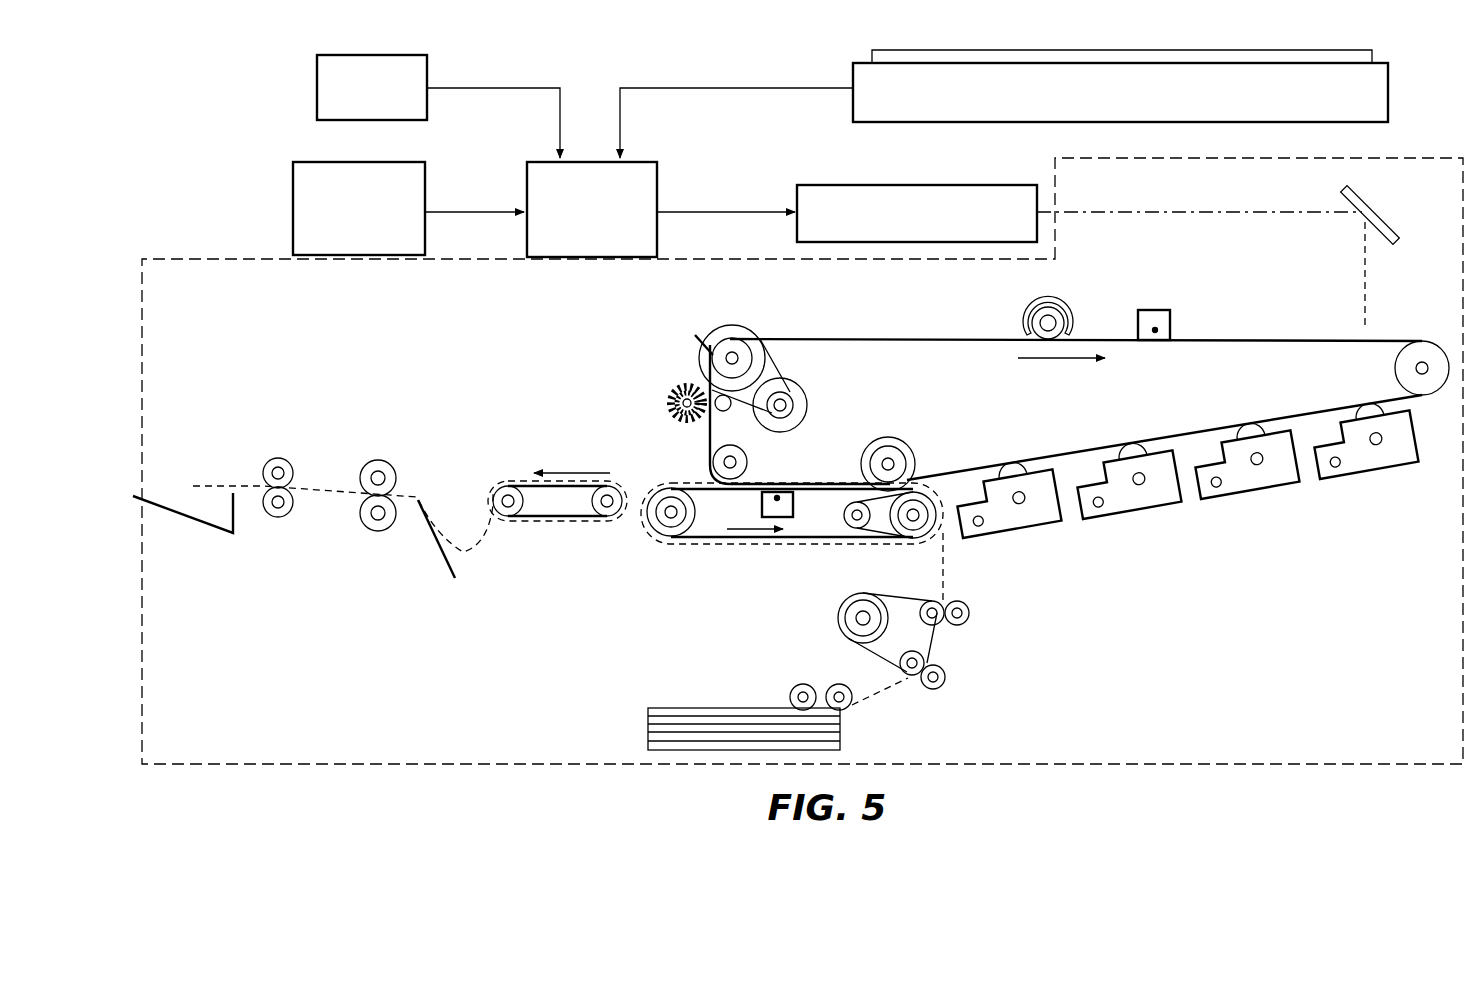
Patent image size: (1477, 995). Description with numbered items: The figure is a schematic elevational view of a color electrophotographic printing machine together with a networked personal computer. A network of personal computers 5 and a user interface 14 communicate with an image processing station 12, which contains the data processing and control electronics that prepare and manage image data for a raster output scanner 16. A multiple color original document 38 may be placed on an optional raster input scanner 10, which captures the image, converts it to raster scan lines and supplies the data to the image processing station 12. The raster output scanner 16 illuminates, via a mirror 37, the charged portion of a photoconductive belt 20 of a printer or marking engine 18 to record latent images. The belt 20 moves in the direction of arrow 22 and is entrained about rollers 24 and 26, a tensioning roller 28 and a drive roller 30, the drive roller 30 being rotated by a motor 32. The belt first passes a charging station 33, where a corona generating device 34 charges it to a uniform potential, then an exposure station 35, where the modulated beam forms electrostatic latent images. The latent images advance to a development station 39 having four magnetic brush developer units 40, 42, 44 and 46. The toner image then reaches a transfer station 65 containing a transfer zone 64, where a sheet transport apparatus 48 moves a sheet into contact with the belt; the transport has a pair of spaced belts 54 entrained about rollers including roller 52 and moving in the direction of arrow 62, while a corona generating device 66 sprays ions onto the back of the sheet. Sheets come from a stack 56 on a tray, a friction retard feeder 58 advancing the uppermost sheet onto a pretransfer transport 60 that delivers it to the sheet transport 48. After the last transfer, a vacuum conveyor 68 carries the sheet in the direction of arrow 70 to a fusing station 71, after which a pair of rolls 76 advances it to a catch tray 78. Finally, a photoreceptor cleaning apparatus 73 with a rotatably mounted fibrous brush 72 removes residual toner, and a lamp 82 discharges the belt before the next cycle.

The personal computer network 5 is at (306, 88).
The raster input scanner 10 is at (850, 53).
The image processing station 12 is at (626, 152).
The user interface 14 is at (282, 191).
The raster output scanner 16 is at (952, 162).
The printer or marking engine 18 is at (1405, 131).
The photoconductive belt 20 is at (1283, 338).
The arrow 22 is at (1050, 362).
The roller 24 is at (748, 465).
The roller 26 is at (917, 462).
The tensioning roller 28 is at (1440, 343).
The drive roller 30 is at (732, 326).
The motor 32 is at (807, 395).
The charging station 33 is at (1190, 336).
The corona generating device 34 is at (1158, 310).
The exposure station 35 is at (1348, 336).
The mirror 37 is at (1362, 196).
The original document 38 is at (1265, 50).
The development station 39 is at (1185, 528).
The developer unit 40 is at (1360, 465).
The developer unit 42 is at (1245, 485).
The developer unit 44 is at (1125, 505).
The developer unit 46 is at (1010, 528).
The sheet transport apparatus 48 is at (782, 539).
The roller 52 is at (928, 545).
The belts 54 is at (812, 548).
The stack of sheets 56 is at (700, 712).
The friction retard feeder 58 is at (835, 686).
The pretransfer transport 60 is at (940, 637).
The arrow 62 is at (758, 537).
The transfer zone 64 is at (790, 472).
The transfer station 65 is at (800, 502).
The corona generating device 66 is at (685, 512).
The vacuum conveyor 68 is at (565, 518).
The arrow 70 is at (572, 466).
The fusing station 71 is at (399, 432).
The fibrous brush 72 is at (668, 400).
The photoreceptor cleaning apparatus 73 is at (651, 378).
The rolls 76 is at (279, 472).
The catch tray 78 is at (205, 525).
The lamp 82 is at (1068, 307).